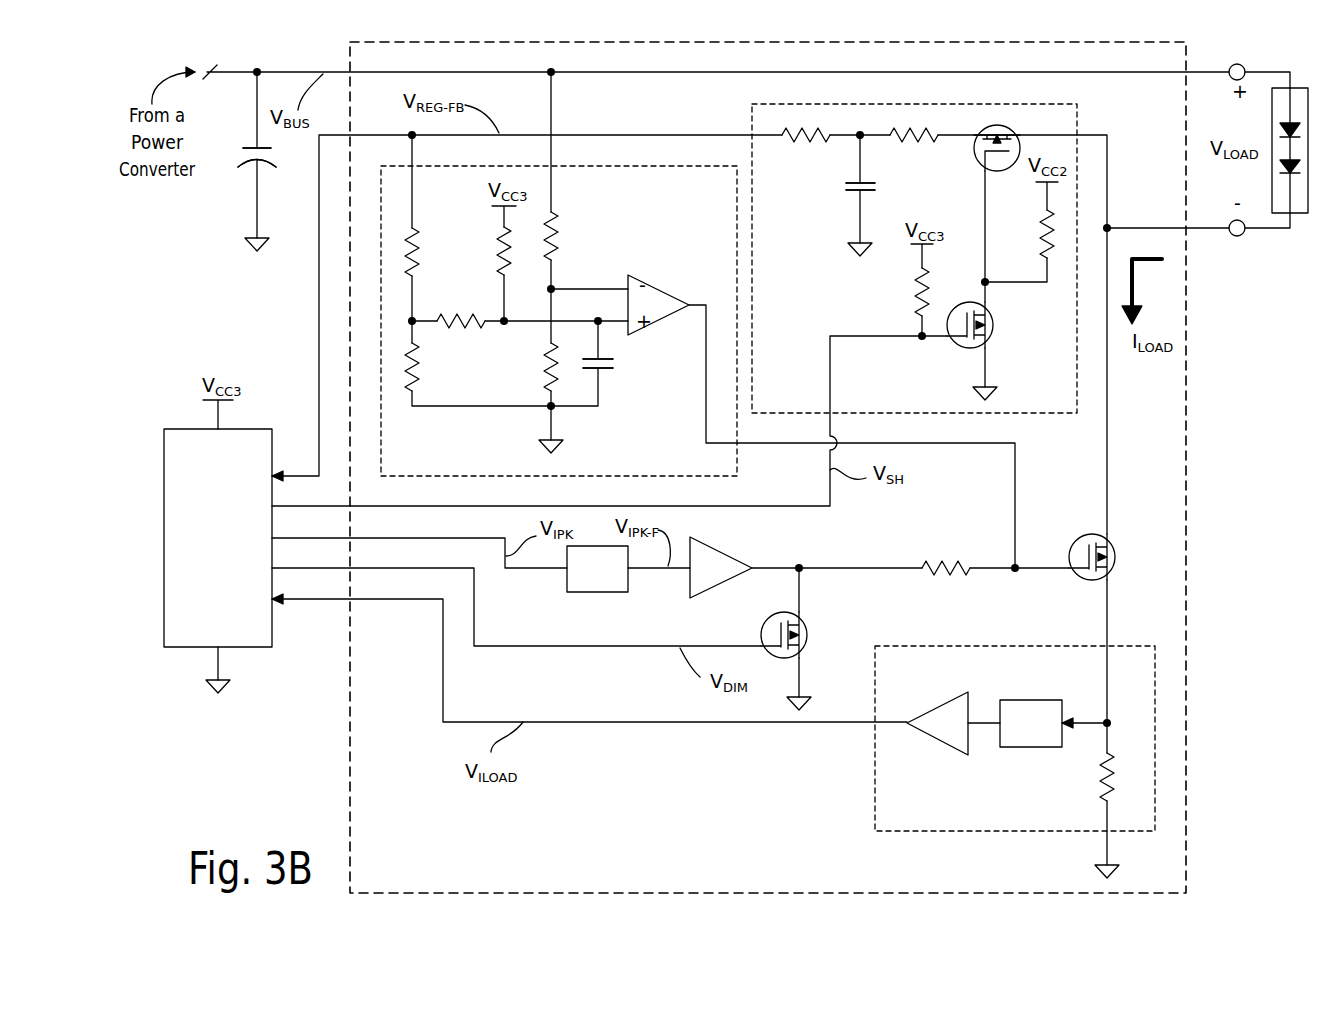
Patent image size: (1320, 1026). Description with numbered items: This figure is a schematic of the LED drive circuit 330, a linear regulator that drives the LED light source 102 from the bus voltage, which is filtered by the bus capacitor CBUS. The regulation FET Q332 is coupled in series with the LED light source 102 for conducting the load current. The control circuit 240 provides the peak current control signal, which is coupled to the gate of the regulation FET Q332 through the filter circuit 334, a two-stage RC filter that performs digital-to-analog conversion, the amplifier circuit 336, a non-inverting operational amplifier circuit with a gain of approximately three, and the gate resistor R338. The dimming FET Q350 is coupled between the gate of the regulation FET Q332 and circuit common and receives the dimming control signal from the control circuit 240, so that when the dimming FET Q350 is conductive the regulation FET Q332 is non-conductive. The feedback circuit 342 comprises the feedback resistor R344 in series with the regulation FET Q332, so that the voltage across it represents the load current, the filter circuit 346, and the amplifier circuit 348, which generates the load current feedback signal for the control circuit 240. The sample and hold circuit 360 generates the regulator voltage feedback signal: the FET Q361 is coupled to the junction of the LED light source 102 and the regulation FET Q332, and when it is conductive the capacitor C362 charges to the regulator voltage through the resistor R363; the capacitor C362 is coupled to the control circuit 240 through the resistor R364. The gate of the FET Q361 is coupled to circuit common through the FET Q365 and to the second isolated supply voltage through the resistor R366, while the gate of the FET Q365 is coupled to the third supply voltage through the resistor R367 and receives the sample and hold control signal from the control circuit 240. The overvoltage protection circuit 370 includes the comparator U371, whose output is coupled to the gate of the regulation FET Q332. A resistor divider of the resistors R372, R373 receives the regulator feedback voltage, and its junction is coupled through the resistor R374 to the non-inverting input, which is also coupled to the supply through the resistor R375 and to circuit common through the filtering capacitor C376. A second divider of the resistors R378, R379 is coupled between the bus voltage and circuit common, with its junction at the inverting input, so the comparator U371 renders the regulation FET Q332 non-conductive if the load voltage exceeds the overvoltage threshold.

The LED light source 102 is at (1298, 182).
The control circuit 240 is at (193, 477).
The LED drive circuit 330 is at (1187, 745).
The filter circuit 334 is at (613, 586).
The amplifier circuit 336 is at (726, 559).
The feedback circuit 342 is at (940, 832).
The filter circuit 346 is at (1015, 700).
The amplifier circuit 348 is at (935, 727).
The sample and hold circuit 360 is at (1064, 413).
The overvoltage protection circuit 370 is at (737, 458).
The bus capacitor CBUS is at (250, 145).
The resistor R372 is at (420, 232).
The resistor R373 is at (412, 382).
The resistor R374 is at (462, 328).
The resistor R375 is at (495, 236).
The resistor R378 is at (556, 240).
The resistor R379 is at (541, 355).
The filtering capacitor C376 is at (610, 368).
The comparator U371 is at (655, 300).
The resistor R364 is at (808, 140).
The capacitor C362 is at (845, 190).
The resistor R363 is at (905, 142).
The FET Q361 is at (980, 170).
The resistor R366 is at (1036, 226).
The resistor R367 is at (910, 288).
The FET Q365 is at (993, 322).
The gate resistor R338 is at (942, 560).
The regulation field-effect transistor Q332 is at (1085, 582).
The dimming FET Q350 is at (808, 630).
The feedback resistor R344 is at (1097, 771).